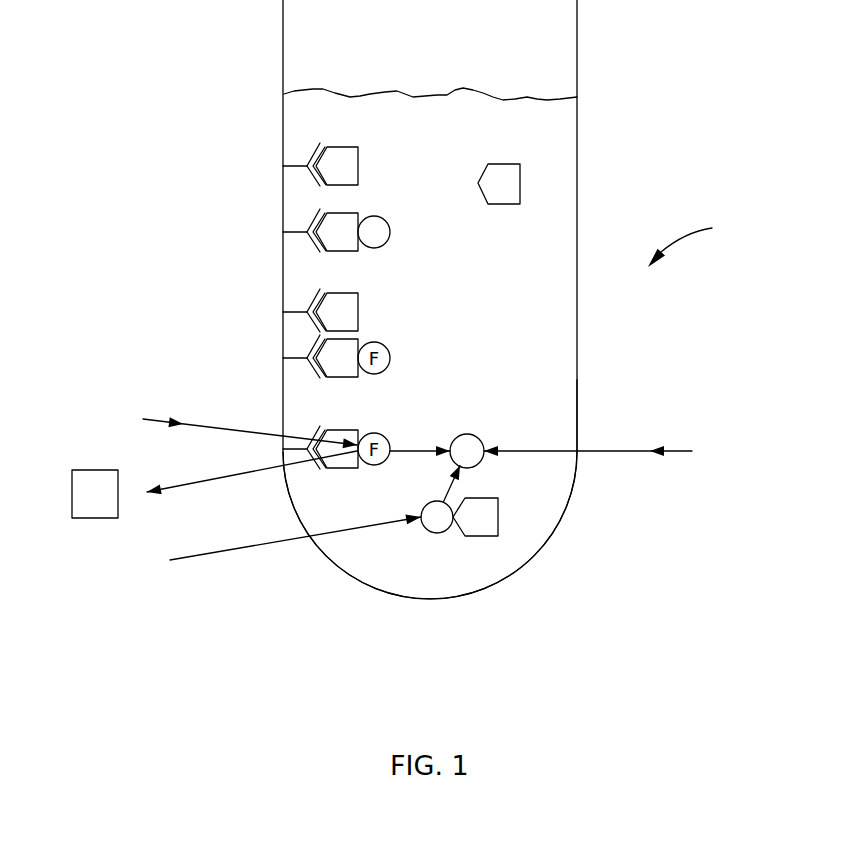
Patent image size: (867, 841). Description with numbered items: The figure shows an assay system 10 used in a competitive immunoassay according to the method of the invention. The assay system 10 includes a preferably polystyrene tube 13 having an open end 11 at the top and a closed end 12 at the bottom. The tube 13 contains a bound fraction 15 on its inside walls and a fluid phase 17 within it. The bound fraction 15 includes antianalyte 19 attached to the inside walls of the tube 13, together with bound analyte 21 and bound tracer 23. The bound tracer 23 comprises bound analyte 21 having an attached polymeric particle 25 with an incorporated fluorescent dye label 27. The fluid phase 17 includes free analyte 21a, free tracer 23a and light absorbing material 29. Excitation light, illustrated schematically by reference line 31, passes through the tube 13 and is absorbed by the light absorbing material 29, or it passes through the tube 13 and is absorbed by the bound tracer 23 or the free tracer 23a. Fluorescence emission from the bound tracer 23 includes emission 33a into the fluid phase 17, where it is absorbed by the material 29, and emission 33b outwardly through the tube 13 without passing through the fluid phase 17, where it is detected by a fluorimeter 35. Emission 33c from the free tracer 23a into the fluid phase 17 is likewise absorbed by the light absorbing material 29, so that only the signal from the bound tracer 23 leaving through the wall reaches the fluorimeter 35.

The assay system 10 is at (695, 241).
The open end 11 is at (503, 68).
The closed end 12 is at (499, 582).
The tube 13 is at (577, 468).
The bound fraction 15 is at (402, 247).
The fluid phase 17 is at (445, 113).
The antianalyte 19 is at (298, 164).
The bound analyte 21 is at (333, 186).
The free analyte 21a is at (515, 183).
The bound tracer 23 is at (333, 251).
The free tracer 23a is at (499, 529).
The polymeric particle 25 is at (373, 249).
The fluorescent dye label 27 is at (372, 217).
The light absorbing material 29 is at (480, 437).
The excitation light 31 is at (223, 430).
The emission into fluid phase 33a is at (403, 450).
The outward emission 33b is at (200, 485).
The emission from free tracer 33c is at (452, 489).
The fluorimeter 35 is at (105, 518).